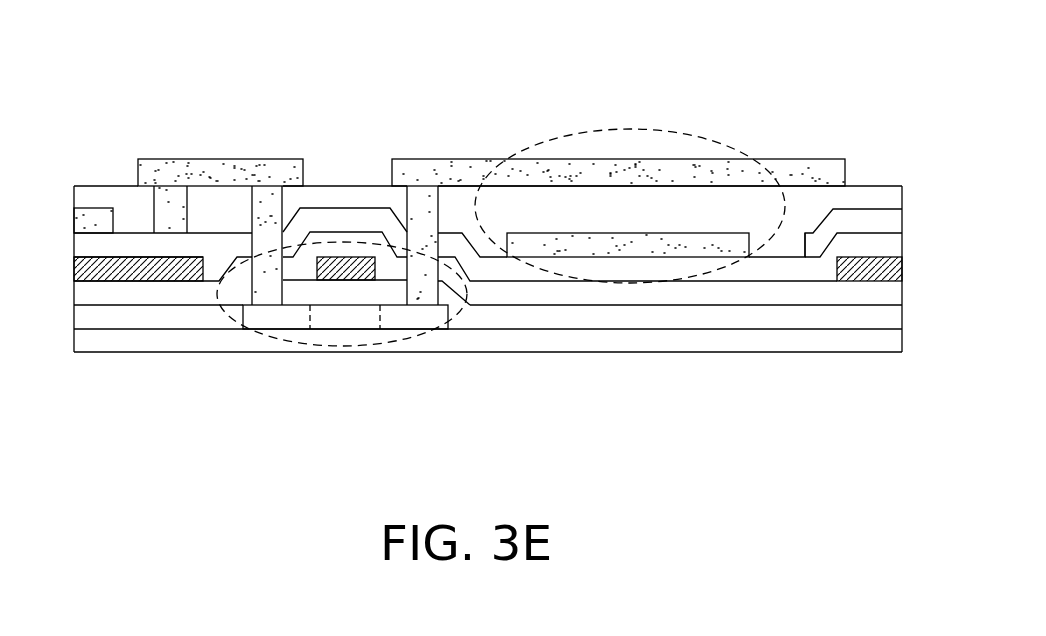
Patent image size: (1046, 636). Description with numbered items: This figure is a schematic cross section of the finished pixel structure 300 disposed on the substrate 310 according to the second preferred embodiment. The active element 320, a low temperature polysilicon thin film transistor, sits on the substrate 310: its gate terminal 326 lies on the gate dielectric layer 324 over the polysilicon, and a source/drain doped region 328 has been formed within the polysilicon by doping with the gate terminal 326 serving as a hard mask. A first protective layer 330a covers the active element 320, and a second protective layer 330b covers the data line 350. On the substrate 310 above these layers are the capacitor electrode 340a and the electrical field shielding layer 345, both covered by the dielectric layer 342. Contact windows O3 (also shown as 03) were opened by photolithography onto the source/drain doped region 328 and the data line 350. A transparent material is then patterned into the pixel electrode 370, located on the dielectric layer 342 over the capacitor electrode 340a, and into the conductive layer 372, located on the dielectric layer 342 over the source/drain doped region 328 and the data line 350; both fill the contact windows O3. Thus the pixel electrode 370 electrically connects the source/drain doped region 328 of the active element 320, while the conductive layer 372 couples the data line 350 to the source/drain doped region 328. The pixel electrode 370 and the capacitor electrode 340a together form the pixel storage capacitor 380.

The pixel structure 300 is at (897, 497).
The substrate 310 is at (820, 343).
The gate dielectric layer 324 is at (703, 322).
The source/drain doped region 328 is at (298, 321).
The active element 320 is at (336, 238).
The gate terminal 326 is at (353, 267).
The first protective layer 330a is at (607, 295).
The second protective layer 330b is at (653, 267).
The capacitor electrode 340a is at (537, 245).
The dielectric layer 342 is at (800, 198).
The electrical field shielding layer 345 is at (817, 245).
The data line 350 is at (877, 280).
The pixel electrode 370 is at (712, 176).
The conductive layer 372 is at (203, 173).
The pixel storage capacitor 380 is at (630, 130).
The contact windows O3 is at (329, 322).
The contact windows 03 is at (268, 243).